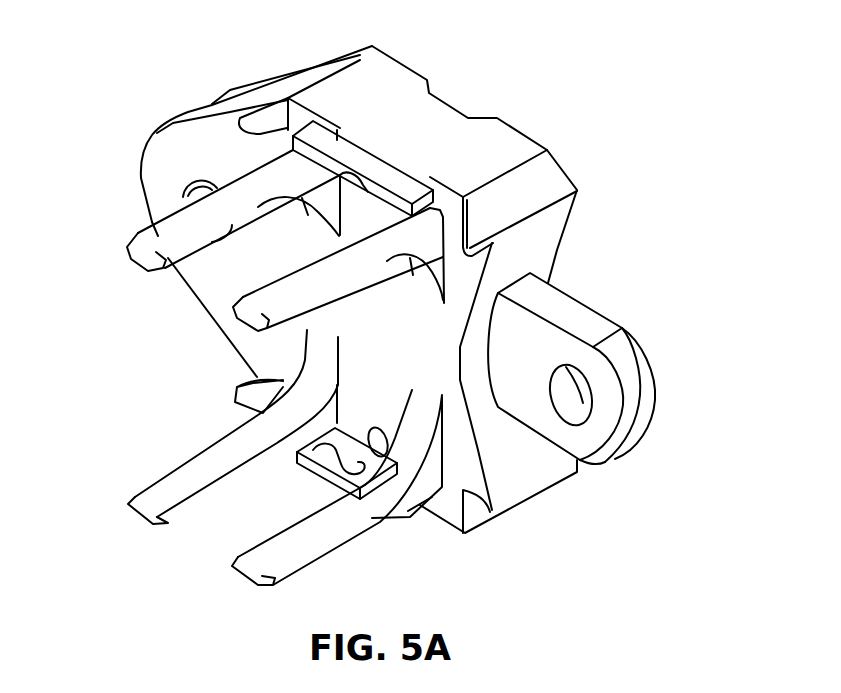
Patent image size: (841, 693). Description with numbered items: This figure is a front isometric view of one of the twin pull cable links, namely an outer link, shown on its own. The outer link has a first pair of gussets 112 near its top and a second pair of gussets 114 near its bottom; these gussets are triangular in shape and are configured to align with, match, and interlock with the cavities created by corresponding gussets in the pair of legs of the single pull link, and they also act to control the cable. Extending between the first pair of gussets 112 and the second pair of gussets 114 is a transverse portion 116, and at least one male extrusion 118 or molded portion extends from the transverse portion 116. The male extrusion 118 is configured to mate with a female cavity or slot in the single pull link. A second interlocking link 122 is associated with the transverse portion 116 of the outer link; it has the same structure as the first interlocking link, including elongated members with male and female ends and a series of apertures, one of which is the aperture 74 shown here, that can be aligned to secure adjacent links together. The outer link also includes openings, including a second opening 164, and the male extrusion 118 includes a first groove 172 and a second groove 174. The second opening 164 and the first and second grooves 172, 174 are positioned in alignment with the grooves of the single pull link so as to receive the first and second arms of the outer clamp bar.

The aperture 74 is at (581, 402).
The first pair of gussets 112 is at (167, 227).
The second pair of gussets 114 is at (160, 488).
The transverse portion 116 is at (480, 141).
The male extrusion 118 is at (338, 140).
The second interlocking link 122 is at (580, 307).
The second opening 164 is at (378, 447).
The first groove 172 is at (335, 191).
The second groove 174 is at (363, 457).